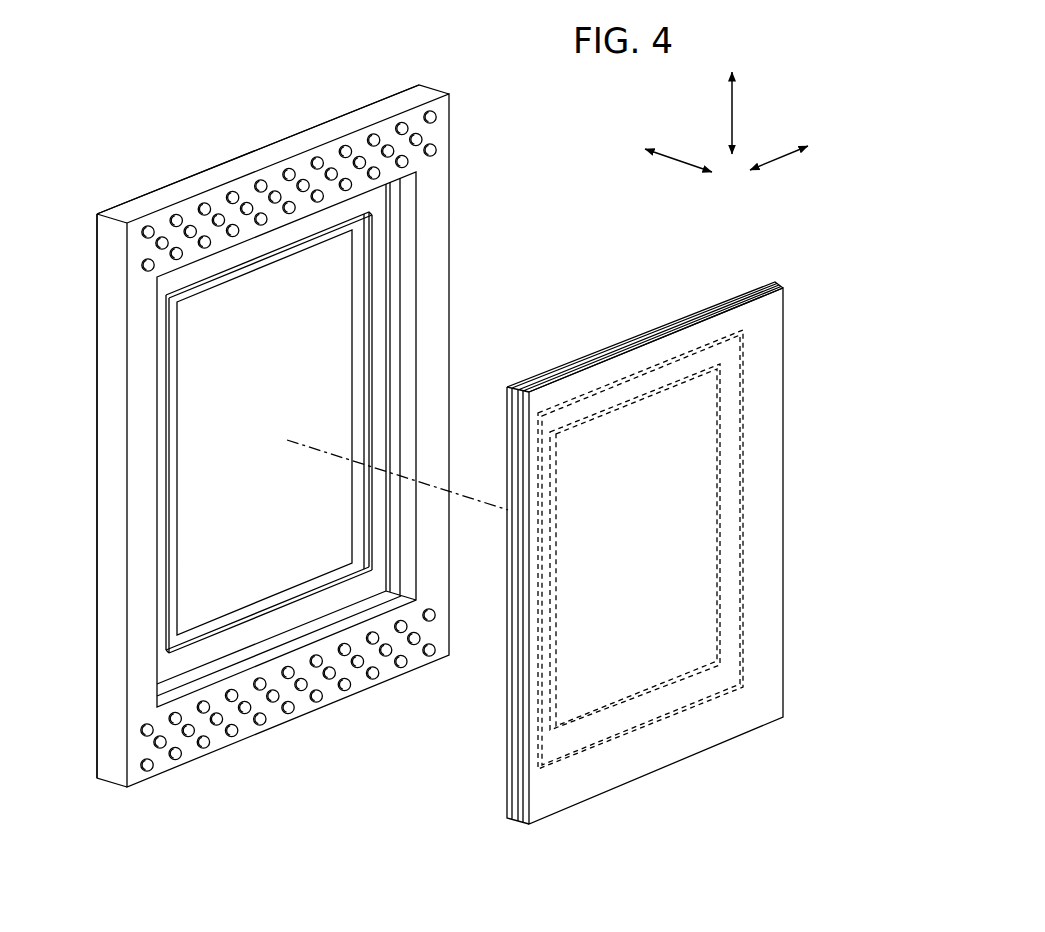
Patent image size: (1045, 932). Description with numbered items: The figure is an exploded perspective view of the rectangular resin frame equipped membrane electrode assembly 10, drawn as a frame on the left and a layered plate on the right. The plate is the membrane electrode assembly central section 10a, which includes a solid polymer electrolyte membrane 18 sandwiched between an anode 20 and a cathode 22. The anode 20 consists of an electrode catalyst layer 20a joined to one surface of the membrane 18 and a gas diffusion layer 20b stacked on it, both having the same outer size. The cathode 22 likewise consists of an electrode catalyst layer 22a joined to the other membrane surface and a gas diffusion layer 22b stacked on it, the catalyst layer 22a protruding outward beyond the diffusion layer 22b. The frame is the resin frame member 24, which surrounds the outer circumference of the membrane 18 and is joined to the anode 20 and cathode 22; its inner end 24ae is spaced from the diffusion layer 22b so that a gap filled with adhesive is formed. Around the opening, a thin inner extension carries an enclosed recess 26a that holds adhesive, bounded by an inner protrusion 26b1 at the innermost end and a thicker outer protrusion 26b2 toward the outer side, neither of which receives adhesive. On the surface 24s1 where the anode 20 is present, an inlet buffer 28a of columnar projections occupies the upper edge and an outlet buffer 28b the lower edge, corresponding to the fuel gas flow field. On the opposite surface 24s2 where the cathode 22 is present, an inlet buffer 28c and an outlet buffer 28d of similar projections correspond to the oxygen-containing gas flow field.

The resin frame equipped membrane electrode assembly 10 is at (619, 115).
The membrane electrode assembly central section 10a is at (725, 294).
The solid polymer electrolyte membrane 18 is at (507, 770).
The anode 20 is at (746, 714).
The electrode catalyst layer 20a is at (513, 803).
The gas diffusion layer 20b is at (538, 807).
The cathode 22 is at (709, 450).
The electrode catalyst layer 22a is at (695, 706).
The gas diffusion layer 22b is at (650, 697).
The resin frame member 24 is at (254, 149).
The surface of the resin frame member 24s1 is at (437, 192).
The surface of the resin frame member 24s2 is at (143, 292).
The inner end of the resin frame member 24ae is at (357, 372).
The recess 26a is at (378, 558).
The inner protrusion 26b1 is at (370, 233).
The outer protrusion 26b2 is at (383, 598).
The inlet buffer 28a is at (422, 137).
The outlet buffer 28b is at (374, 673).
The inlet buffer 28c is at (331, 168).
The outlet buffer 28d is at (300, 697).